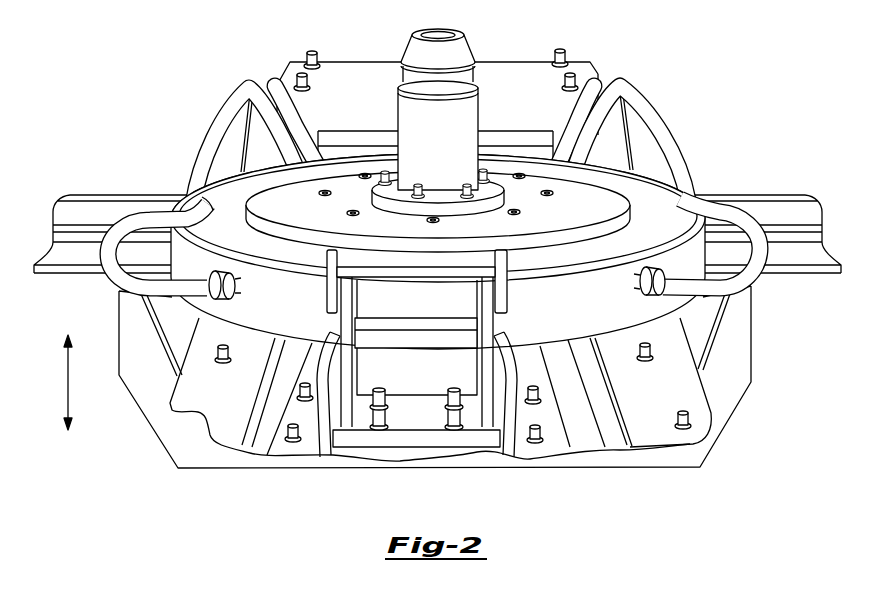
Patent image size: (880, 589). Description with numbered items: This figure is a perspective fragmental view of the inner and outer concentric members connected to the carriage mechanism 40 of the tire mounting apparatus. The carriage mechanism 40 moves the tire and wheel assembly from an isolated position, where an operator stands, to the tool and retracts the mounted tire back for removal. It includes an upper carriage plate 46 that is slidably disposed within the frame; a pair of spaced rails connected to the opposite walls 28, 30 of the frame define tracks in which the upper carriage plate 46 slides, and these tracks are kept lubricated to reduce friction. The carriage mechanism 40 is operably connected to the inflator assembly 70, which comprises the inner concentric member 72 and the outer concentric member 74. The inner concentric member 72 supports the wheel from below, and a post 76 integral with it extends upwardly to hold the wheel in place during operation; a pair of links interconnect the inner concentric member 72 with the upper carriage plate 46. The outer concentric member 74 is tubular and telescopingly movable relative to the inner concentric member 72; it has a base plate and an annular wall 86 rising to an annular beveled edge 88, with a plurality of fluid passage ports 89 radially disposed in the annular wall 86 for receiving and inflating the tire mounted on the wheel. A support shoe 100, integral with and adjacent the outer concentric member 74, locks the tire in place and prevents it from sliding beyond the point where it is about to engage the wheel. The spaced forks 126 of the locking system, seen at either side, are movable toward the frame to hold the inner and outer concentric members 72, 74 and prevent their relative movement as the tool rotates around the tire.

The wall 28 is at (203, 410).
The wall 30 is at (647, 425).
The carriage mechanism 40 is at (748, 447).
The upper carriage plate 46 is at (578, 435).
The inflator assembly 70 is at (638, 142).
The inner concentric member 72 is at (658, 197).
The outer concentric member 74 is at (555, 333).
The post 76 is at (462, 51).
The annular wall 86 is at (177, 258).
The annular beveled edge 88 is at (185, 213).
The fluid passage ports 89 is at (236, 296).
The support shoe 100 is at (348, 405).
The spaced forks 126 is at (78, 218).